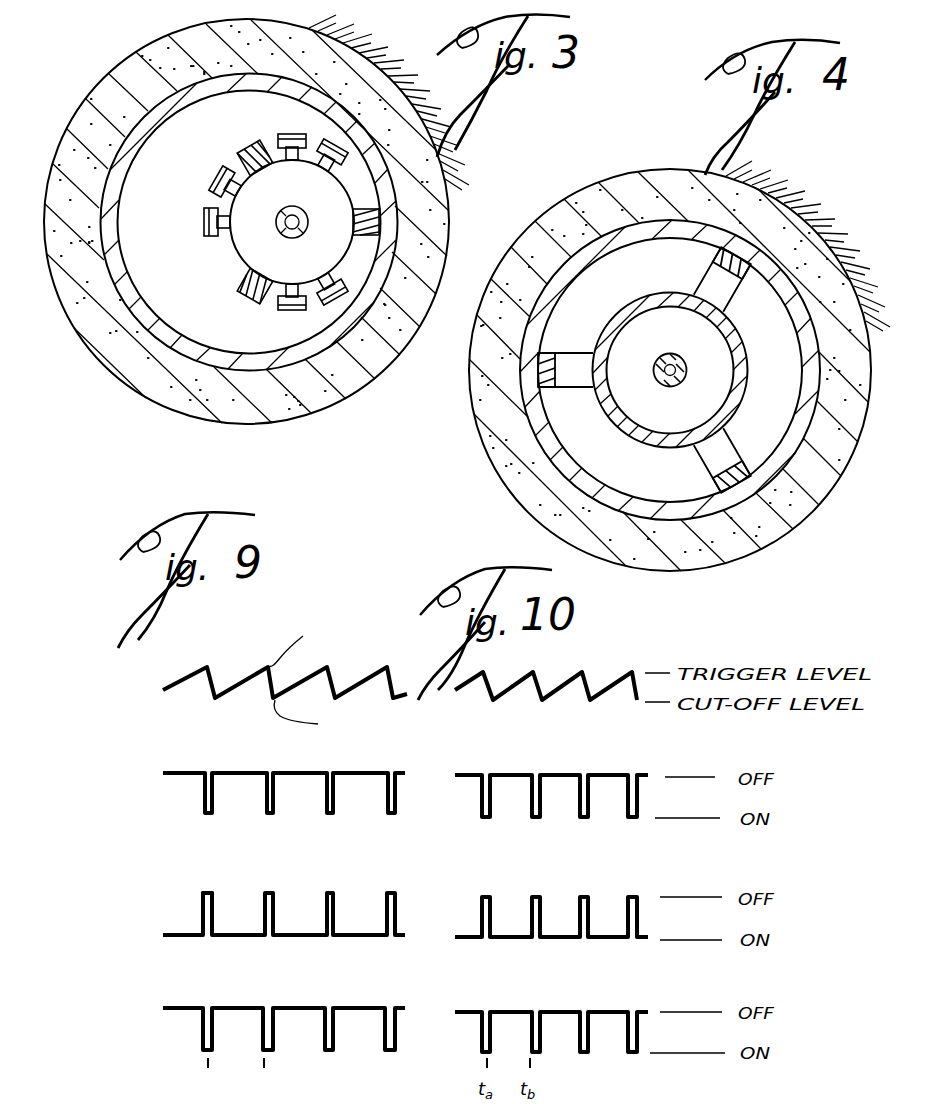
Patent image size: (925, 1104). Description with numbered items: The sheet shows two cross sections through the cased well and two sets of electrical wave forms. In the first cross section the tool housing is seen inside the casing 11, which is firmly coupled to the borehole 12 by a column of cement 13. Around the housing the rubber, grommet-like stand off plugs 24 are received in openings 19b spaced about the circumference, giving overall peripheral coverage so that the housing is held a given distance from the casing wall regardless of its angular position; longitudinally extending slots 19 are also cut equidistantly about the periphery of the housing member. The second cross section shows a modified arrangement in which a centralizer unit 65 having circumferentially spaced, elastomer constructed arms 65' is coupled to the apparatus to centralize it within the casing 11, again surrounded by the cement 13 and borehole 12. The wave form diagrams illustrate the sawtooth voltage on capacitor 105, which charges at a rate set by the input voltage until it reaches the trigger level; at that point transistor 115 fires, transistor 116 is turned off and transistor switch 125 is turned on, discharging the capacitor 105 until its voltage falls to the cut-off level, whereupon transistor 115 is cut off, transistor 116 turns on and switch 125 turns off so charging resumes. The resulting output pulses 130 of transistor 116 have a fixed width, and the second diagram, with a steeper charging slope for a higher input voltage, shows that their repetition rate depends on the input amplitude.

In FIG. 3, the casing 11 is at (162, 104).
In FIG. 4, the casing 11 is at (615, 240).
In FIG. 3, the borehole 12 is at (142, 60).
In FIG. 4, the borehole 12 is at (487, 400).
In FIG. 3, the column of cement 13 is at (100, 100).
In FIG. 4, the column of cement 13 is at (505, 456).
In FIG. 3, the longitudinally extending slots 19 is at (288, 288).
In FIG. 3, the openings 19b is at (258, 166).
In FIG. 3, the stand off plugs 24 is at (380, 222).
In FIG. 4, the centralizer unit 65 is at (687, 370).
In FIG. 4, the arms 65' is at (644, 370).
In FIG. 9, the capacitor 105 is at (228, 680).
In FIG. 9, the transistor 115 is at (228, 795).
In FIG. 9, the transistor 116 is at (228, 915).
In FIG. 9, the transistor switch 125 is at (228, 1055).
In FIG. 9, the output pulses 130 is at (214, 902).